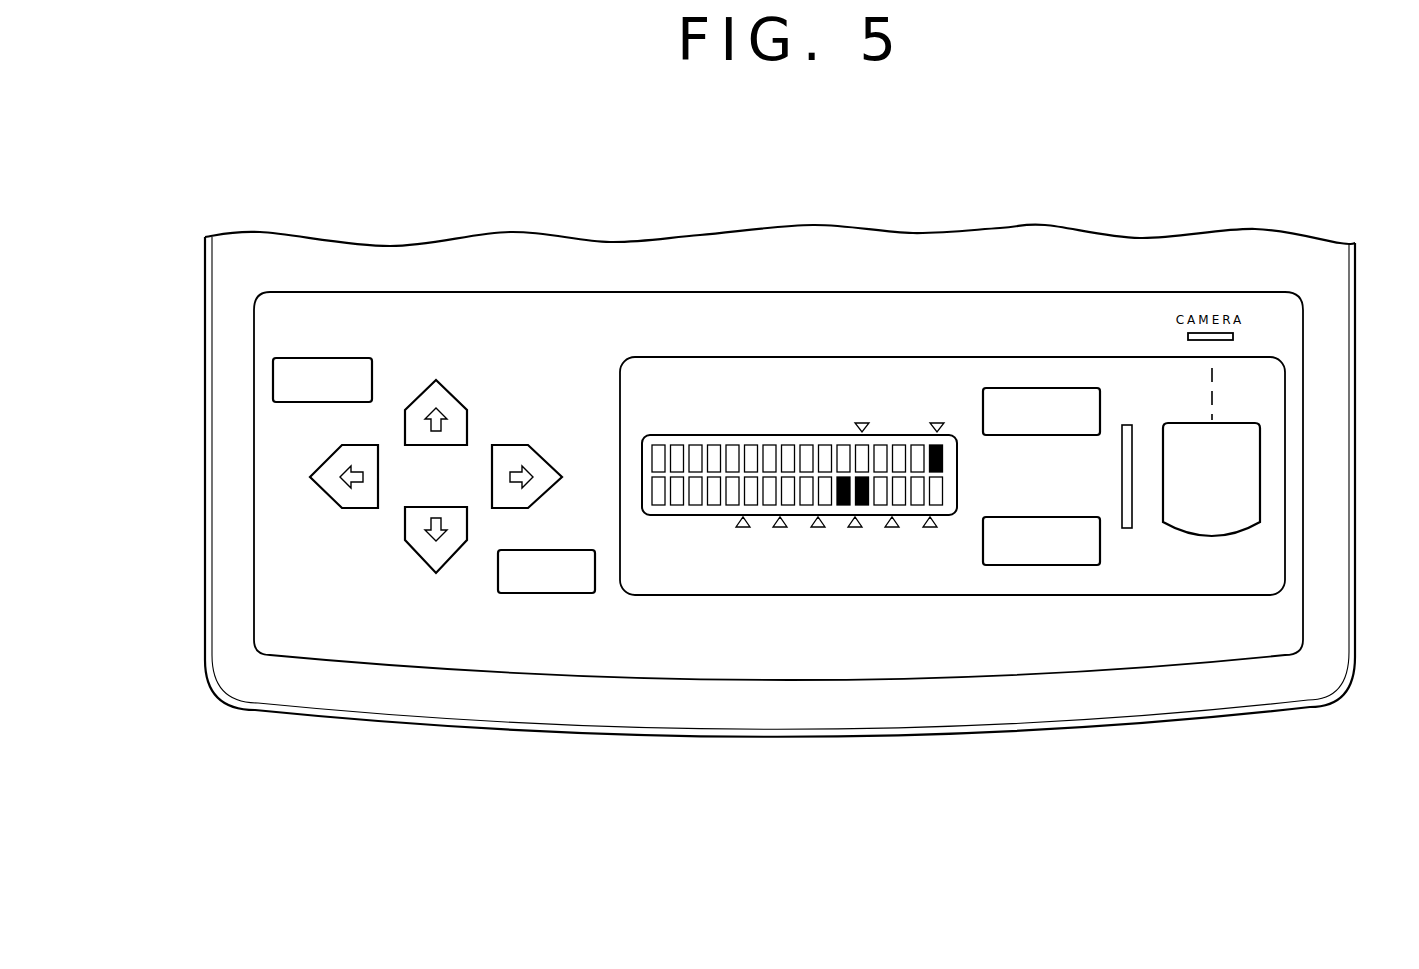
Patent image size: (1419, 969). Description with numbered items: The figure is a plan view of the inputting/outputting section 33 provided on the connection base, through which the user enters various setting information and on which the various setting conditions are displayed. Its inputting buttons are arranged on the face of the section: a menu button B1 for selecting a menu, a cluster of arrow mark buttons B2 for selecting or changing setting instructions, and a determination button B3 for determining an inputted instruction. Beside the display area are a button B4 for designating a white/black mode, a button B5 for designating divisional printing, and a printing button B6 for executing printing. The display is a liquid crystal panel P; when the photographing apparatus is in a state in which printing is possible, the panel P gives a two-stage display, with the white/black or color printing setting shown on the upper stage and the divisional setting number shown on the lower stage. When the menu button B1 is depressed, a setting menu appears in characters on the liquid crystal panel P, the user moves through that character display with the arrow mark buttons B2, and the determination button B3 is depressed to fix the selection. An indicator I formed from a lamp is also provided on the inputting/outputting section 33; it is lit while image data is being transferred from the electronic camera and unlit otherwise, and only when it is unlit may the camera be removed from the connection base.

The inputting/outputting section 33 is at (520, 303).
The menu button B1 is at (273, 378).
The arrow mark buttons B2 is at (383, 570).
The determination button B3 is at (535, 594).
The white/black mode button B4 is at (1027, 388).
The divisional printing button B5 is at (1027, 565).
The printing button B6 is at (1200, 540).
The liquid crystal panel P is at (728, 435).
The indicator I is at (1233, 336).